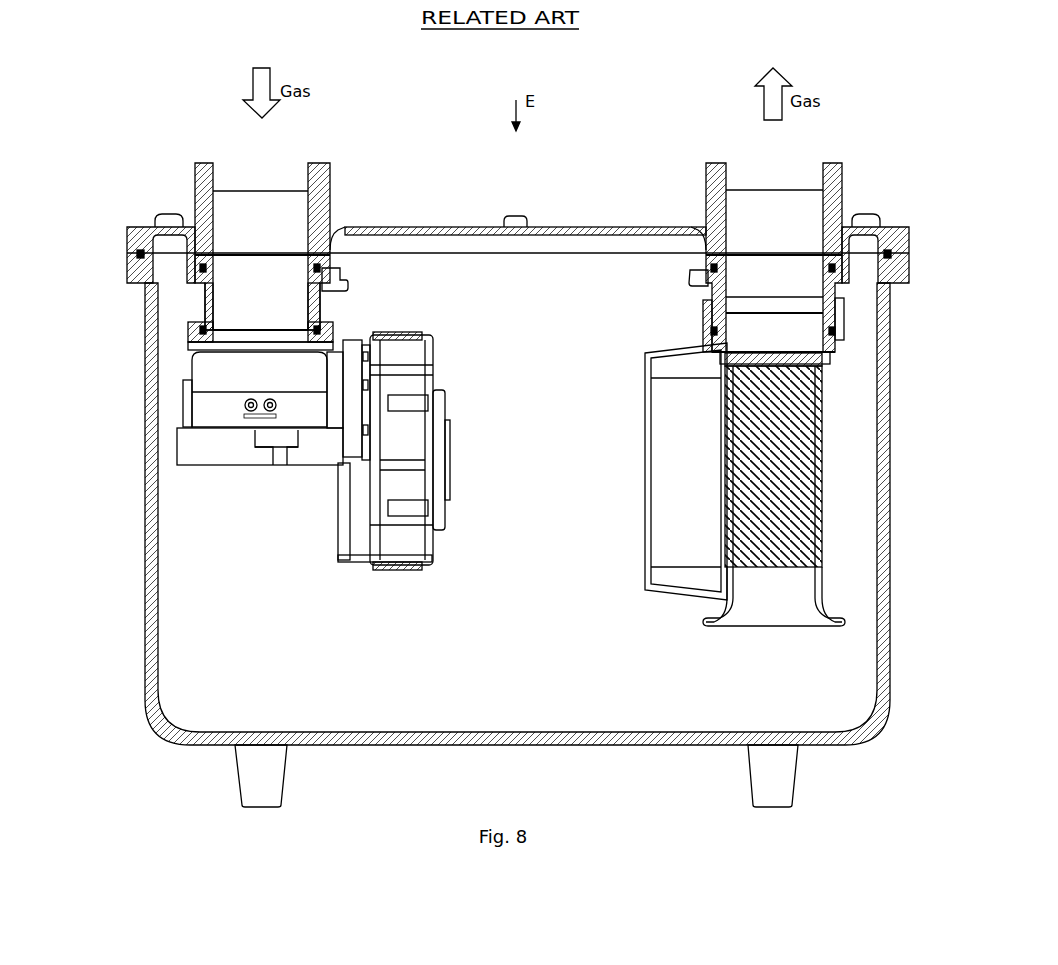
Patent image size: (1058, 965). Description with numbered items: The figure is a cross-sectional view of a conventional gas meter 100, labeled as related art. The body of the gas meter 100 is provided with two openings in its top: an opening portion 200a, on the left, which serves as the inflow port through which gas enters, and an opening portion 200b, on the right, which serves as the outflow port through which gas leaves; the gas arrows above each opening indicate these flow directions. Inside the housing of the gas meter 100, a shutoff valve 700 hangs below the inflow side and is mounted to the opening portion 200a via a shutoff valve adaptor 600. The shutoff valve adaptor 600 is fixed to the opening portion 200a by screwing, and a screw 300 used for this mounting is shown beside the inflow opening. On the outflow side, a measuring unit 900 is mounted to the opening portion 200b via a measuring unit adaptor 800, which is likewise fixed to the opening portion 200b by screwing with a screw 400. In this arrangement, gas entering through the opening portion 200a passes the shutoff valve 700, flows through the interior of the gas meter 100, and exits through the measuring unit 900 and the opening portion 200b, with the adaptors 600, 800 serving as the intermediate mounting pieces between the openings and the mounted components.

The gas meter 100 is at (105, 608).
The opening portion 200a is at (285, 203).
The opening portion 200b is at (800, 203).
The screw 300 is at (350, 289).
The screw 400 is at (691, 289).
The shutoff valve adaptor 600 is at (205, 298).
The shutoff valve 700 is at (206, 408).
The measuring unit adaptor 800 is at (843, 278).
The measuring unit 900 is at (805, 490).